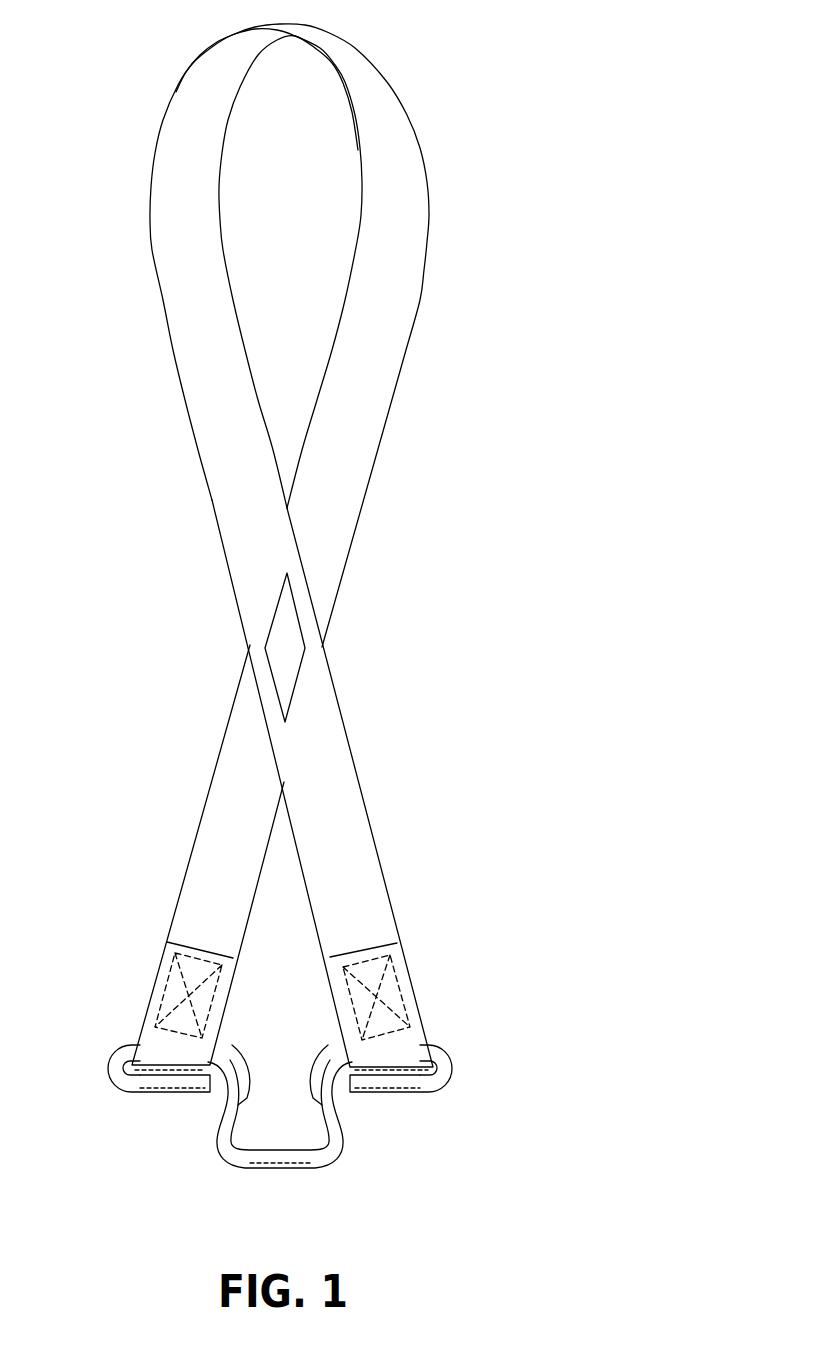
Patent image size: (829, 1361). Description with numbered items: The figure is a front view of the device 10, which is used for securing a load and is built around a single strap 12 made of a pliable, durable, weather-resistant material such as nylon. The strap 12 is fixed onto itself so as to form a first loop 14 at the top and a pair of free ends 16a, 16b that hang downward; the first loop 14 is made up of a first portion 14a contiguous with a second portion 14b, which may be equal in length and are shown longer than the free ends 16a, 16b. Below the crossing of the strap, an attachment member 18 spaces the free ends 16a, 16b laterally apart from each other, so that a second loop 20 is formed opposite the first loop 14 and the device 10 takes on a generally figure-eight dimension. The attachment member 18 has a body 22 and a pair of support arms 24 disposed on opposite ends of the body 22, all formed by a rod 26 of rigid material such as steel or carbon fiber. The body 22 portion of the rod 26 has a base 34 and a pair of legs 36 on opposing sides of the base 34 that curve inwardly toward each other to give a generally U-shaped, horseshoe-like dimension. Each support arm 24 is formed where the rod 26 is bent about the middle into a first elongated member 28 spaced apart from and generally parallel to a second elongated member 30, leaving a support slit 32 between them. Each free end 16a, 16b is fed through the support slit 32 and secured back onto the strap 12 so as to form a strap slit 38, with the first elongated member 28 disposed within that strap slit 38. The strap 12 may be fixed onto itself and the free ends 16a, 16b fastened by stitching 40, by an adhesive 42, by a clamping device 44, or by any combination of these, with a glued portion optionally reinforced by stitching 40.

The device 10 is at (302, 638).
The strap 12 is at (284, 545).
The first loop 14 is at (280, 335).
The first portion 14a is at (188, 339).
The second portion 14b is at (403, 230).
The free end 16a is at (174, 855).
The free end 16b is at (312, 783).
The attachment member 18 is at (304, 1122).
The second loop 20 is at (297, 960).
The body 22 is at (318, 1150).
The support arm 24 is at (304, 1074).
The rod 26 is at (318, 1134).
The first elongated member 28 is at (137, 1049).
The second elongated member 30 is at (150, 1092).
The support slit 32 is at (195, 1070).
The base 34 is at (313, 1163).
The leg 36 is at (240, 1105).
The strap slit 38 is at (218, 1053).
The stitching 40 is at (405, 975).
The adhesive 42 is at (175, 969).
The clamping device 44 is at (275, 610).